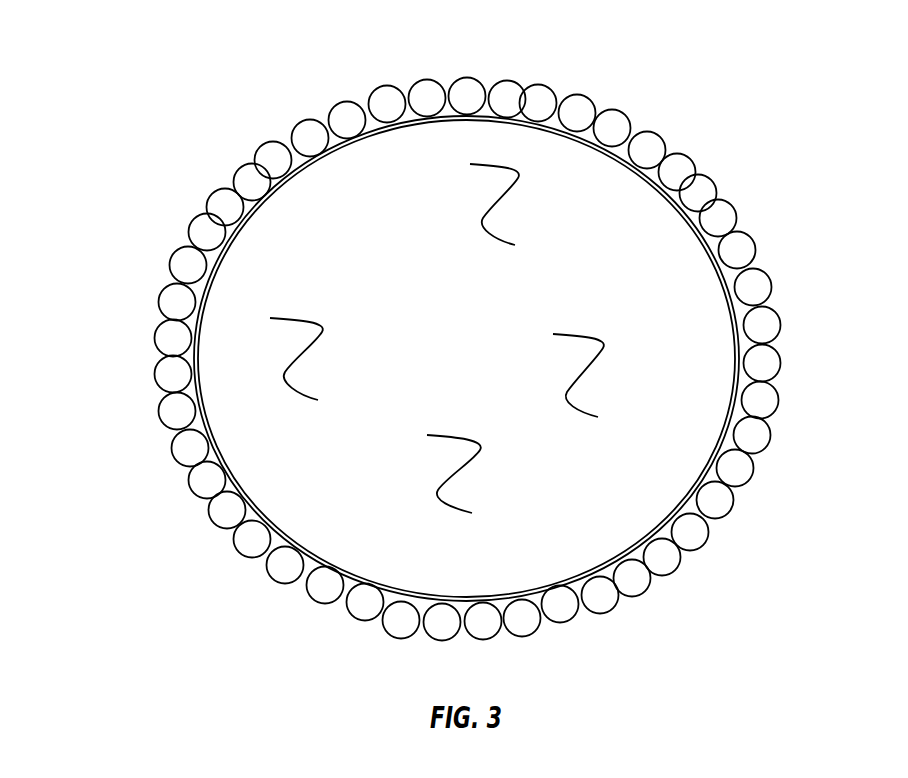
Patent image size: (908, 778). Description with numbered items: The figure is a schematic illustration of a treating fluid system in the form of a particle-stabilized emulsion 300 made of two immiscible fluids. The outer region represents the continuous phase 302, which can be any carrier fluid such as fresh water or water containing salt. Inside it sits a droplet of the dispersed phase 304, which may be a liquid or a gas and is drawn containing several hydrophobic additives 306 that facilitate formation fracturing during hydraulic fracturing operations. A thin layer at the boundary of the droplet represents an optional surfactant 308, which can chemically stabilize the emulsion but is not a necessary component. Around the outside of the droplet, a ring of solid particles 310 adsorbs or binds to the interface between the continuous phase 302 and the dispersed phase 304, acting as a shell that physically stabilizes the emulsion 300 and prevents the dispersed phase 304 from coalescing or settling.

The particle-stabilized emulsion 300 is at (128, 78).
The continuous phase 302 is at (872, 107).
The dispersed phase 304 is at (489, 372).
The hydrophobic additives 306 is at (579, 340).
The surfactant 308 is at (740, 272).
The solid particles 310 is at (782, 323).